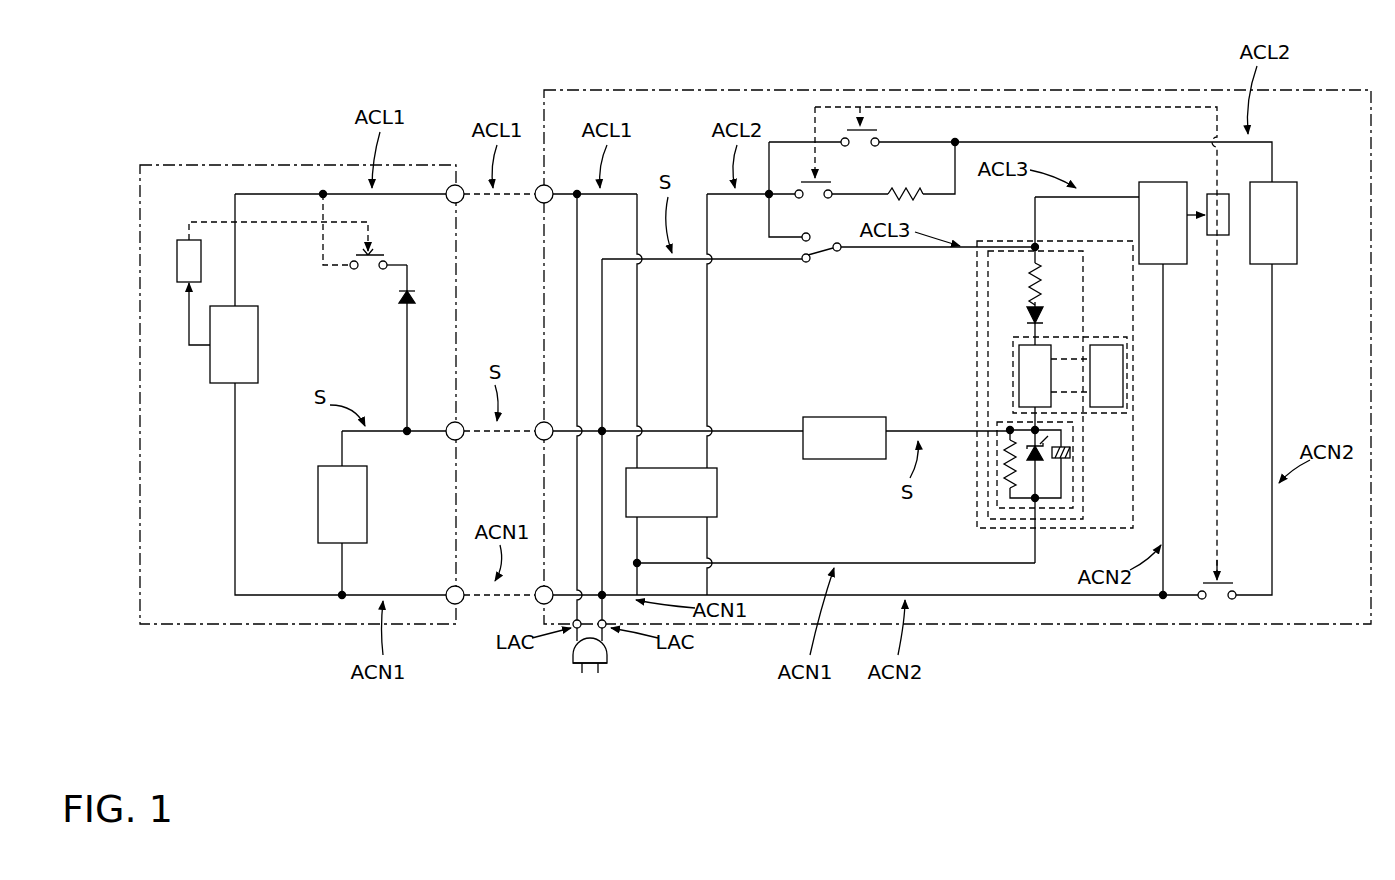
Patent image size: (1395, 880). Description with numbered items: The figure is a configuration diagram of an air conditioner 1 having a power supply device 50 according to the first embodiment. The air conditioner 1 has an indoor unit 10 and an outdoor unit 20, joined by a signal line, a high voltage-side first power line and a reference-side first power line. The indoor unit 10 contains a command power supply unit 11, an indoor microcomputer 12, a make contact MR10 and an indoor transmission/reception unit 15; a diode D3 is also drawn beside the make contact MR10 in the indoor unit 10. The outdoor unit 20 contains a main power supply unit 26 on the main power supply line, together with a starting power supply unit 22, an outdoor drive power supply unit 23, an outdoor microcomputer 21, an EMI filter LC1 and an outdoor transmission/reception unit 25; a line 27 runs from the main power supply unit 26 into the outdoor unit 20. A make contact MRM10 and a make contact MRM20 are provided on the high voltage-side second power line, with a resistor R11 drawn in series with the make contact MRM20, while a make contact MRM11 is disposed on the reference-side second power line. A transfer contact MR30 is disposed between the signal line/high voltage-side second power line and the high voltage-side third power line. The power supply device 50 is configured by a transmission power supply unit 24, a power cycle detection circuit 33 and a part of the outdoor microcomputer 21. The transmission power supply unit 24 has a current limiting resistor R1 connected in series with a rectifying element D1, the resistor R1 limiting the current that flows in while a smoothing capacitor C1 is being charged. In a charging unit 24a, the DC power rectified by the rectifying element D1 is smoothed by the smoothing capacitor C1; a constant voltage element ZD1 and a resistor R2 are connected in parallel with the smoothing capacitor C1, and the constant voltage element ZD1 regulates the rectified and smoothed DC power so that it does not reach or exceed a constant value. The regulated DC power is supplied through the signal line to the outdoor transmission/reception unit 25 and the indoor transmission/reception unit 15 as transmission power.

The air conditioner 1 is at (514, 683).
The indoor unit 10 is at (283, 157).
The command power supply unit 11 is at (258, 340).
The indoor microcomputer 12 is at (186, 239).
The indoor transmission/reception unit 15 is at (367, 487).
The outdoor unit 20 is at (858, 87).
The outdoor microcomputer 21 is at (1222, 232).
The starting power supply unit 22 is at (1170, 262).
The outdoor drive power supply unit 23 is at (1297, 203).
The transmission power supply unit 24 is at (986, 272).
The charging unit 24a is at (996, 440).
The outdoor transmission/reception unit 25 is at (860, 461).
The main power supply unit 26 is at (616, 657).
The AC line 27 is at (598, 443).
The power cycle detection circuit 33 is at (1131, 376).
The power supply device 50 is at (975, 354).
The make contact MR10 is at (383, 252).
The diode D3 is at (413, 300).
The EMI filter LC1 is at (717, 492).
The make contact MRM10 is at (876, 130).
The make contact MRM20 is at (830, 182).
The make contact MRM11 is at (1236, 583).
The resistor R11 is at (925, 197).
The transfer contact MR30 is at (809, 263).
The current limiting resistor R1 is at (1042, 280).
The rectifying element D1 is at (1046, 318).
The resistor R2 is at (1003, 478).
The constant voltage element ZD1 is at (1042, 470).
The smoothing capacitor C1 is at (1072, 452).